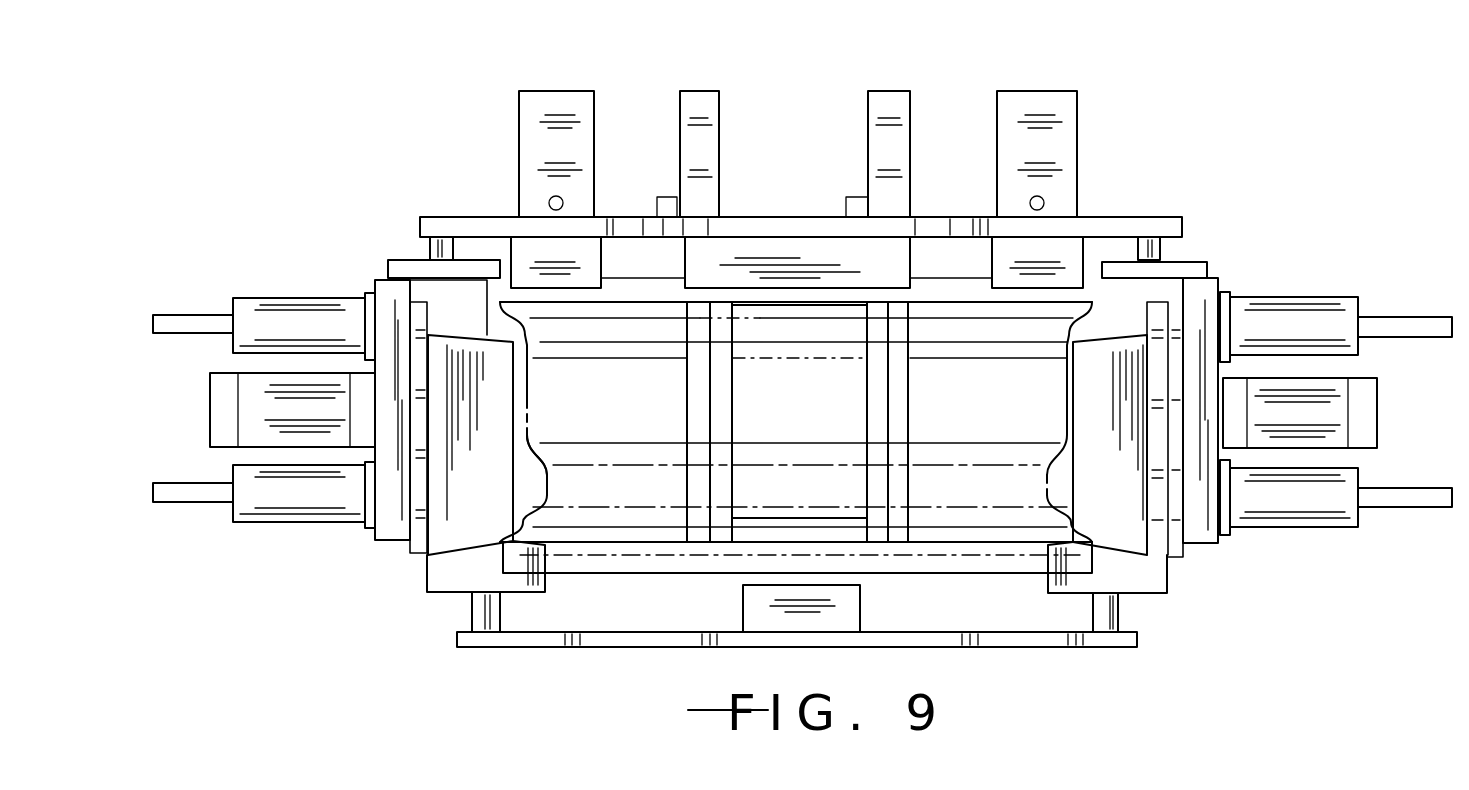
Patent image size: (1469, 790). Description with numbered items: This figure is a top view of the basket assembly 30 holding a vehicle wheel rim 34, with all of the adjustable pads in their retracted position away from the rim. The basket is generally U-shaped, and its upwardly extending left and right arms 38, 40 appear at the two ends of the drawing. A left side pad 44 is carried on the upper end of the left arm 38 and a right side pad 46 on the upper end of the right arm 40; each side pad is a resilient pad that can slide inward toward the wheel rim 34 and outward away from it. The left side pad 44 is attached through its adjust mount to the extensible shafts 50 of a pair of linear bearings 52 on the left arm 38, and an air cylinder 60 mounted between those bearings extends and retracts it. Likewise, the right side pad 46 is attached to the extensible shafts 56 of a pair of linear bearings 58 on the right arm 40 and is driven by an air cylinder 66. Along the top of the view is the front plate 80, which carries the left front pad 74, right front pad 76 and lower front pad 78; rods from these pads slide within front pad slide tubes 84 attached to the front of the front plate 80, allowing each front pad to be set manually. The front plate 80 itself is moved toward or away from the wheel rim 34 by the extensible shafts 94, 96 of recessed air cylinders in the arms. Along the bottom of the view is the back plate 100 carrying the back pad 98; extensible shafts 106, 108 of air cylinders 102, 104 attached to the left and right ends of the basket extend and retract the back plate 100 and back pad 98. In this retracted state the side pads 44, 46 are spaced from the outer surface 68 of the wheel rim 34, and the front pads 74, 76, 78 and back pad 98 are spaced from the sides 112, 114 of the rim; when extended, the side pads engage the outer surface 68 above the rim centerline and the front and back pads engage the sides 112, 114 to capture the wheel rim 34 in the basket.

The basket assembly 30 is at (308, 162).
The vehicle wheel rim 34 is at (622, 422).
The left arm 38 is at (387, 298).
The right arm 40 is at (1205, 303).
The left side pad 44 is at (457, 505).
The right side pad 46 is at (1087, 410).
The extensible shafts 50 is at (177, 317).
The linear bearings 52 is at (289, 312).
The extensible shafts 56 is at (1392, 323).
The linear bearings 58 is at (1280, 317).
The air cylinder 60 is at (253, 407).
The air cylinder 66 is at (1340, 410).
The outer surface 68 is at (533, 433).
The left front pad 74 is at (523, 260).
The right front pad 76 is at (1063, 268).
The lower front pad 78 is at (770, 248).
The front plate 80 is at (740, 232).
The front pad slide tubes 84 is at (542, 100).
The extensible shaft 94 is at (1163, 248).
The extensible shaft 96 is at (435, 250).
The back pad 98 is at (747, 608).
The back plate 100 is at (1038, 640).
The air cylinder 102 is at (442, 575).
The air cylinder 104 is at (1168, 572).
The extensible shaft 106 is at (473, 607).
The extensible shaft 108 is at (1120, 615).
The side 112 is at (614, 300).
The side 114 is at (637, 577).